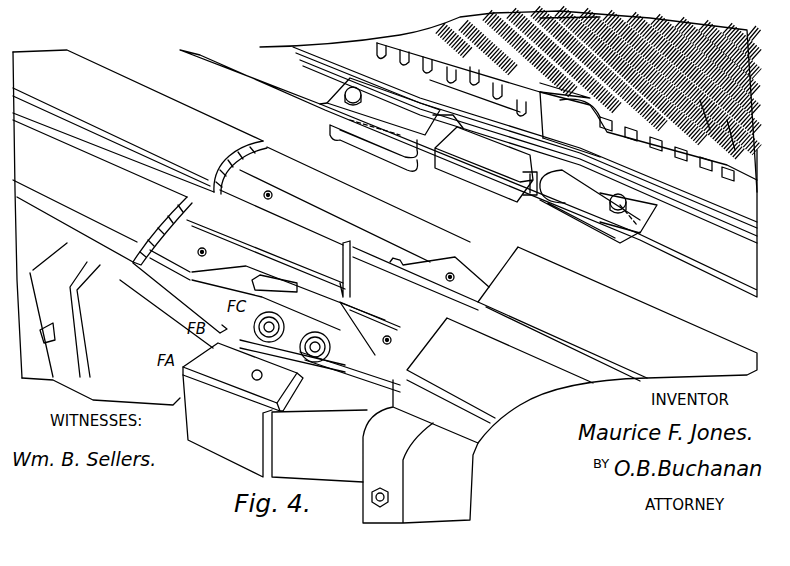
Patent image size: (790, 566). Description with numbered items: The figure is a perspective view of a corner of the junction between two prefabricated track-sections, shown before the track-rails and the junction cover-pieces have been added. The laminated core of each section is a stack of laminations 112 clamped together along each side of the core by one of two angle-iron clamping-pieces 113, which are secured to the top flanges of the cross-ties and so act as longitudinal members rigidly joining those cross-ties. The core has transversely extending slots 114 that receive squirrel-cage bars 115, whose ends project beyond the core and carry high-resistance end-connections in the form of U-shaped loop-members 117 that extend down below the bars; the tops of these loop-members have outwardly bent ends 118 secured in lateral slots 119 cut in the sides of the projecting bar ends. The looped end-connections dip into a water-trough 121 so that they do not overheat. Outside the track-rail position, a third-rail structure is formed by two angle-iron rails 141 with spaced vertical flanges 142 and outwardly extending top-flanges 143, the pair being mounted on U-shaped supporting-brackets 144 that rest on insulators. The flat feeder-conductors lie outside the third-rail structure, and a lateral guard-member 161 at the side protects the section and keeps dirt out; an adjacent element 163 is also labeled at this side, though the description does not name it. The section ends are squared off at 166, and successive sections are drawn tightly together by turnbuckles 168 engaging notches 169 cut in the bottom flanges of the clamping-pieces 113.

The laminations 112 is at (630, 27).
The angle-iron clamping-pieces 113 is at (292, 55).
The transversely extending slots 114 is at (657, 25).
The squirrel-cage bars 115 is at (480, 33).
The U-shaped loop-members 117 is at (475, 96).
The outwardly bent ends 118 is at (640, 100).
The lateral slots 119 is at (623, 103).
The water-trough 121 is at (543, 125).
The angle-iron rails 141 is at (303, 216).
The vertical flanges 142 is at (292, 198).
The top-flanges 143 is at (263, 177).
The U-shaped supporting-brackets 144 is at (378, 257).
The lateral guard-members 161 is at (84, 342).
The boards 163 is at (218, 190).
The squared-off ends 166 is at (549, 18).
The turnbuckles 168 is at (477, 180).
The notches 169 is at (325, 107).